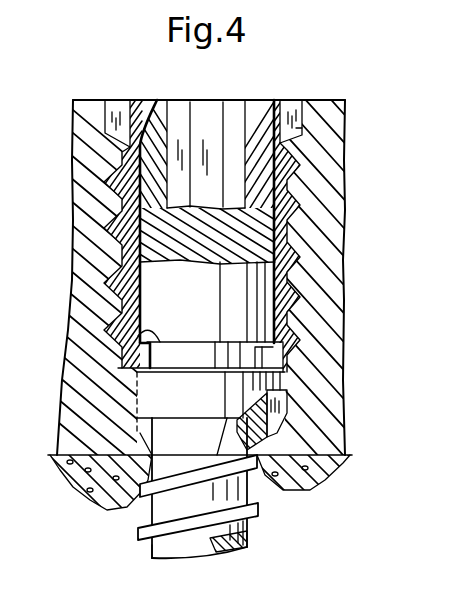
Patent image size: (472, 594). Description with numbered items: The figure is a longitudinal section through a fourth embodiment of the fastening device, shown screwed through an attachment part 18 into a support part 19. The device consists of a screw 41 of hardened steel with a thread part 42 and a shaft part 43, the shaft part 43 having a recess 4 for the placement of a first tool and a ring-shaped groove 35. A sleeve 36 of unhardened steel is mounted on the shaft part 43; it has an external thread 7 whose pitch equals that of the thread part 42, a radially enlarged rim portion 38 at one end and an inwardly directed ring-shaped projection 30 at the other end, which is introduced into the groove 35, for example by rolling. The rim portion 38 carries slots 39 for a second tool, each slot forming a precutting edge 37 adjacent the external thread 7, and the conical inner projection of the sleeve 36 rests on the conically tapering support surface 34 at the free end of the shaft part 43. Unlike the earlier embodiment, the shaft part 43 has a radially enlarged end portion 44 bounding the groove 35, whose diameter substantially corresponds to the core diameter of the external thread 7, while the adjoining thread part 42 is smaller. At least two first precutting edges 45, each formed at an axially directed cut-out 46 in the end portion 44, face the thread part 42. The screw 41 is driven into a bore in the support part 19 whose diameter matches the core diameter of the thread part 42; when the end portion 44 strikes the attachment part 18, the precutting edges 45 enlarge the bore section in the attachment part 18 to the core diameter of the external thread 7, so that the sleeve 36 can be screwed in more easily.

The recess 4 is at (203, 112).
The external thread 7 is at (283, 262).
The attachment part 18 is at (315, 283).
The support part 19 is at (310, 481).
The ring-shaped projection 30 is at (200, 348).
The support surface 34 is at (150, 107).
The ring-shaped groove 35 is at (118, 258).
The sleeve 36 is at (296, 200).
The precutting edges 37 is at (338, 157).
The rim portion 38 is at (310, 121).
The slots 39 is at (304, 113).
The screw 41 is at (130, 548).
The thread part 42 is at (160, 518).
The shaft part 43 is at (183, 245).
The end portion 44 is at (118, 400).
The first precutting edges 45 is at (270, 428).
The cut-out 46 is at (133, 408).